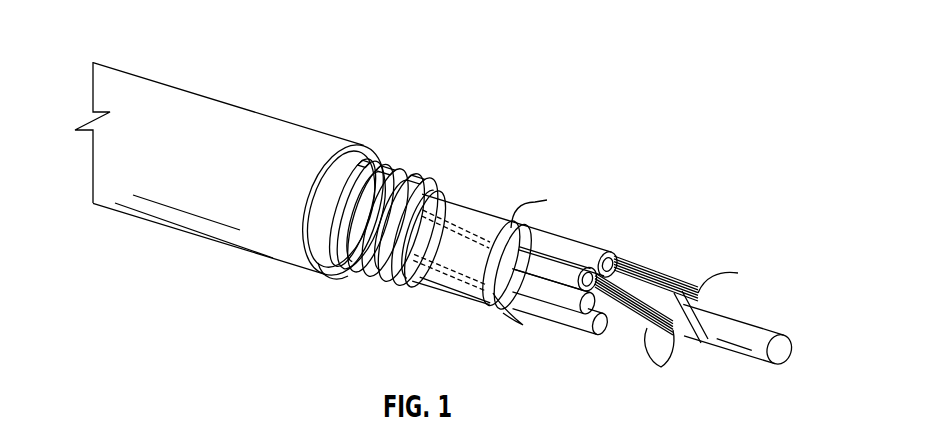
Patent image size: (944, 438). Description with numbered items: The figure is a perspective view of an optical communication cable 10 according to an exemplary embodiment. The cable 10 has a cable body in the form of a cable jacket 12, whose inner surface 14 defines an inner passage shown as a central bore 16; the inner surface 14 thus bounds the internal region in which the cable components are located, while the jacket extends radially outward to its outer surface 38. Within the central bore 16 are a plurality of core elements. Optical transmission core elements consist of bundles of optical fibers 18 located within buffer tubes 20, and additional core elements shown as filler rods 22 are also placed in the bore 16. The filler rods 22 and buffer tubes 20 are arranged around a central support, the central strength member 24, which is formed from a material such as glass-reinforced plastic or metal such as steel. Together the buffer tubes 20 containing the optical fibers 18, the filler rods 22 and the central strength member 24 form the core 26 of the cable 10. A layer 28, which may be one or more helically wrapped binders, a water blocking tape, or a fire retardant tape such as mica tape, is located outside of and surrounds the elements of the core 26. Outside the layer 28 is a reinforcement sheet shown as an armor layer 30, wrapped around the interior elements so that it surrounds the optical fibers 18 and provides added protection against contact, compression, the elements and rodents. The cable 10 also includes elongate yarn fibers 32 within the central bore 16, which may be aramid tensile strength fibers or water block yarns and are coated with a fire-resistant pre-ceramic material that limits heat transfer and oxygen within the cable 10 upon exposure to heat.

The cable 10 is at (428, 76).
The cable jacket 12 is at (213, 122).
The inner surface 14 is at (327, 264).
The central bore 16 is at (312, 243).
The optical fibers 18 is at (691, 288).
The buffer tubes 20 is at (560, 260).
The filler rods 22 is at (573, 306).
The central strength member 24 is at (791, 352).
The core 26 is at (715, 357).
The layer 28 is at (467, 224).
The armor layer 30 is at (417, 182).
The yarn fibers 32 is at (547, 200).
The outer surface 38 is at (188, 244).